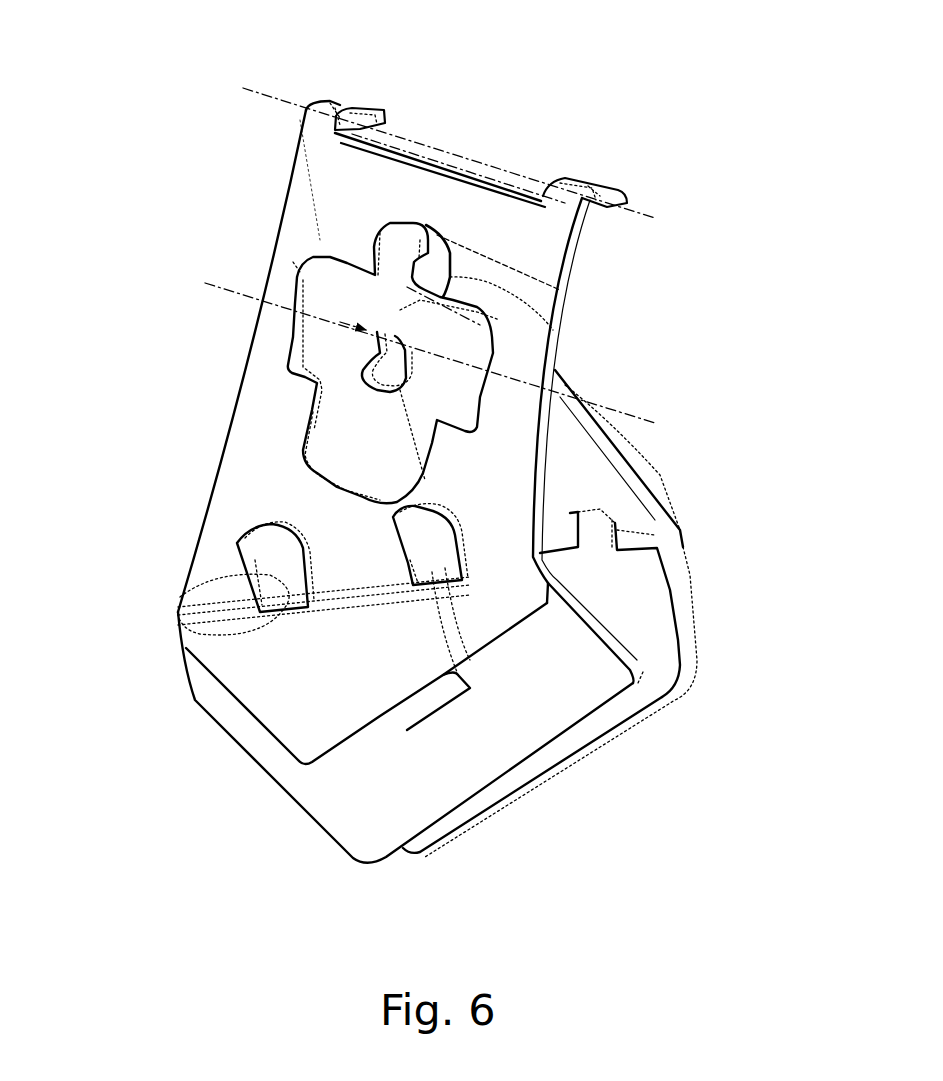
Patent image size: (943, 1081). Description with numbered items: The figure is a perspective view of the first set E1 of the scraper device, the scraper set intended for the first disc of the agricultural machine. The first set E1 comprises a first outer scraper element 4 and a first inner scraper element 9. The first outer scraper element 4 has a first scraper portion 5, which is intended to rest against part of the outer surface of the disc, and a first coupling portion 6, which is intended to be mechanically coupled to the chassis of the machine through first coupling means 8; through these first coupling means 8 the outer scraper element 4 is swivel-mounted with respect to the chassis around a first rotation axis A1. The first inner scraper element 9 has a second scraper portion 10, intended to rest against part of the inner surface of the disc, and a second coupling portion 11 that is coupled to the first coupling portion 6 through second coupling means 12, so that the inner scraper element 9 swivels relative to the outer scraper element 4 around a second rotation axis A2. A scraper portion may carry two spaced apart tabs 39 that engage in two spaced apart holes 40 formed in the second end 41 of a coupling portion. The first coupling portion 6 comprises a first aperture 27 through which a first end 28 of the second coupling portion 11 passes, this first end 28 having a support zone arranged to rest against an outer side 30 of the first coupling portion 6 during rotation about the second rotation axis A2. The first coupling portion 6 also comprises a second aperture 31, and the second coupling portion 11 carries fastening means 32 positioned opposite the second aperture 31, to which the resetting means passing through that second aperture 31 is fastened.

The first outer scraper element 4 is at (214, 459).
The first scraper portion 5 is at (392, 860).
The first coupling portion 6 is at (311, 243).
The first coupling means 8 is at (352, 104).
The first inner scraper element 9 is at (696, 545).
The second scraper portion 10 is at (664, 716).
The second coupling portion 11 is at (606, 438).
The second coupling means 12 is at (315, 290).
The first aperture 27 is at (290, 330).
The first end 28 is at (294, 260).
The outer side 30 is at (330, 165).
The second aperture 31 is at (553, 330).
The fastening means 32 is at (560, 290).
The tabs 39 is at (178, 608).
The holes 40 is at (408, 575).
The second end 41 is at (193, 546).
The first rotation axis A1 is at (300, 104).
The second rotation axis A2 is at (580, 393).
The first set E1 is at (491, 144).